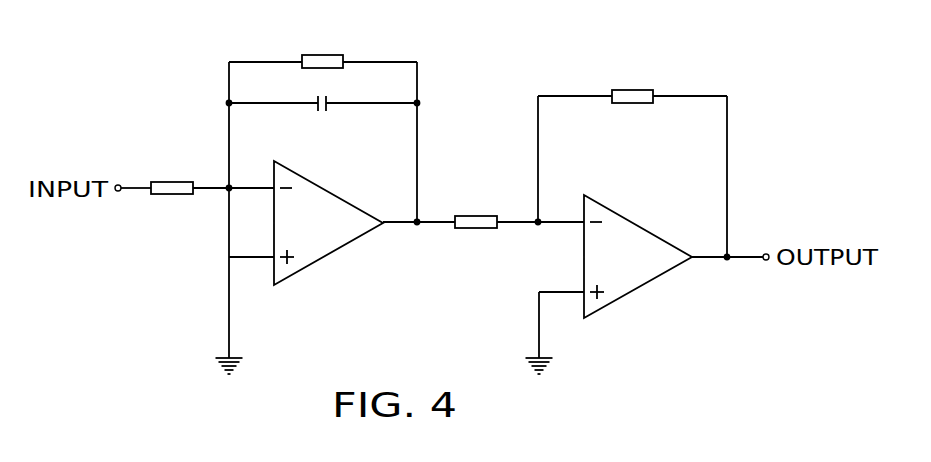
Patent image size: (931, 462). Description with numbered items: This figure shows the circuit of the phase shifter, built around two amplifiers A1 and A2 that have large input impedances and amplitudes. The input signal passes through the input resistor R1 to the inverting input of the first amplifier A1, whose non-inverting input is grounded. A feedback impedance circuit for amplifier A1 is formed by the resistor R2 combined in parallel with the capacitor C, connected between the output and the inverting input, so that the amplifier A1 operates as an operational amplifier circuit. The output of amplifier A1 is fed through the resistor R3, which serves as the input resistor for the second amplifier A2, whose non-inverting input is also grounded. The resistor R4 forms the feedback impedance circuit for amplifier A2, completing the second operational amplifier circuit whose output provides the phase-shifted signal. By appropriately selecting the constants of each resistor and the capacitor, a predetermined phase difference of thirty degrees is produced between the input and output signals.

The input resistor R1 is at (172, 173).
The resistor R2 is at (322, 45).
The capacitor C is at (323, 117).
The amplifier A1 is at (328, 223).
The input resistor R3 is at (476, 207).
The resistor R4 is at (632, 80).
The amplifier A2 is at (638, 256).